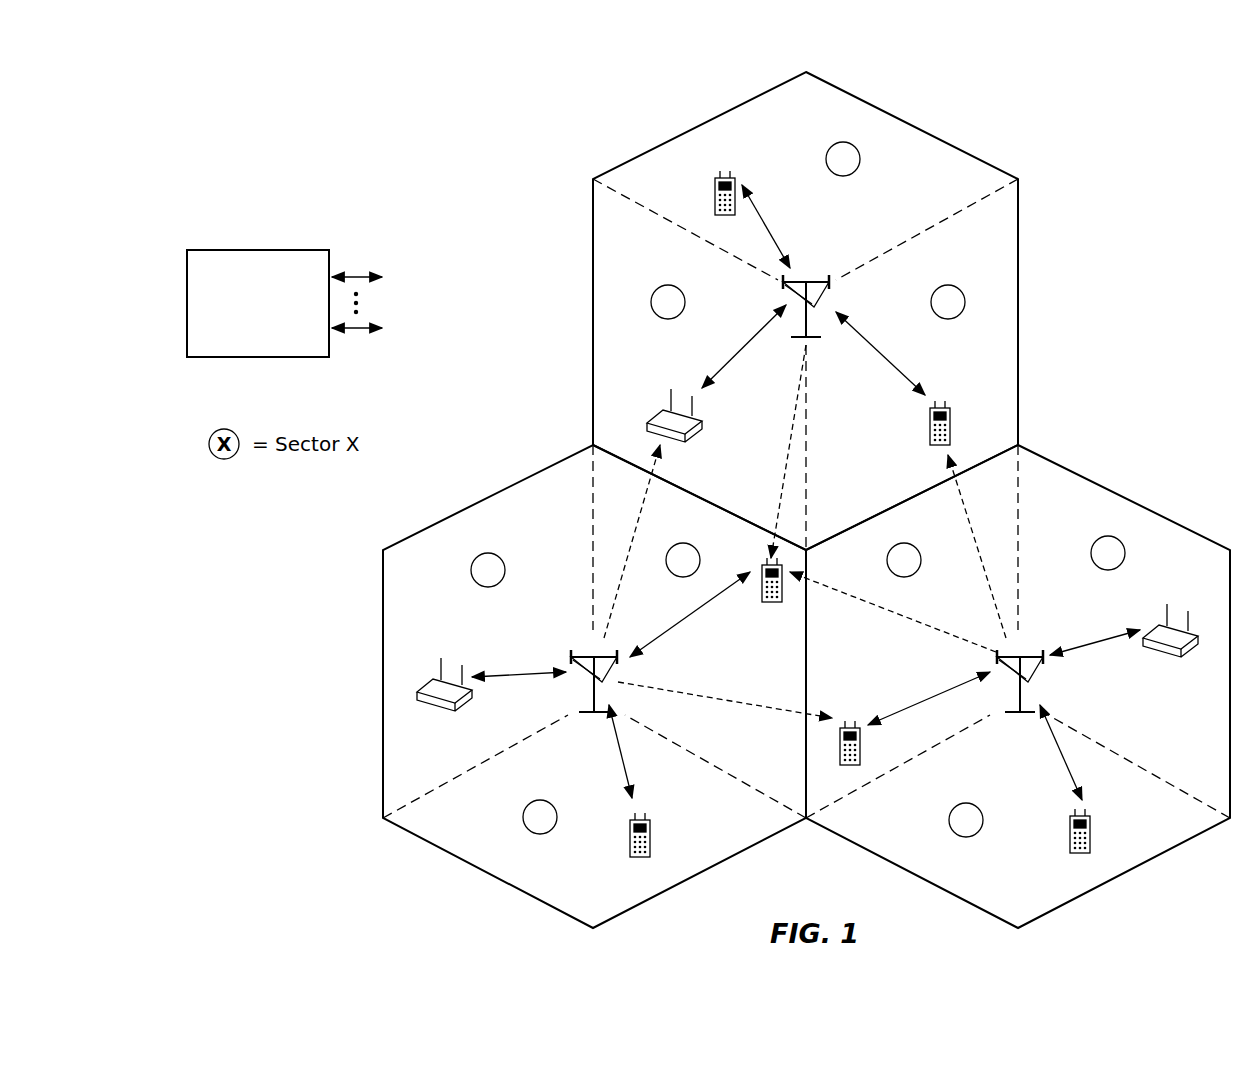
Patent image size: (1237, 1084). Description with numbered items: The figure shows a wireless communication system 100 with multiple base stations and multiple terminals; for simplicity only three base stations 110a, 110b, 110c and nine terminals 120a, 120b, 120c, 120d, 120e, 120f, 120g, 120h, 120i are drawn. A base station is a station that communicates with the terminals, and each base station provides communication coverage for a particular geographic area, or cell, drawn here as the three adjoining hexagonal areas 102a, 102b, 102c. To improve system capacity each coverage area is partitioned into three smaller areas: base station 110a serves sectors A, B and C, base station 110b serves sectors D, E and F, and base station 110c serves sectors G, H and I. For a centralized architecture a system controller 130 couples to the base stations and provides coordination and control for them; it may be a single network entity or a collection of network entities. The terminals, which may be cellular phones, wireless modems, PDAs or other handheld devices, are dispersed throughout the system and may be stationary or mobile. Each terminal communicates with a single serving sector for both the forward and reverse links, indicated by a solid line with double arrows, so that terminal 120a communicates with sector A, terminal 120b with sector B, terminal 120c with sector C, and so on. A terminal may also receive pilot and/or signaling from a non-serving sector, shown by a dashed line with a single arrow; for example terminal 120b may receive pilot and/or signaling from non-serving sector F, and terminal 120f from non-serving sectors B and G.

The wireless communication system 100 is at (1165, 141).
The geographic area 102a is at (928, 110).
The geographic area 102b is at (487, 497).
The geographic area 102c is at (1138, 497).
The base station 110a is at (798, 278).
The base station 110b is at (590, 652).
The base station 110c is at (1022, 652).
The terminal 120a is at (712, 186).
The terminal 120b is at (656, 408).
The terminal 120c is at (952, 418).
The terminal 120d is at (428, 682).
The terminal 120e is at (650, 826).
The terminal 120f is at (760, 598).
The terminal 120g is at (856, 714).
The terminal 120h is at (1066, 828).
The terminal 120i is at (1175, 624).
The system controller 130 is at (250, 249).